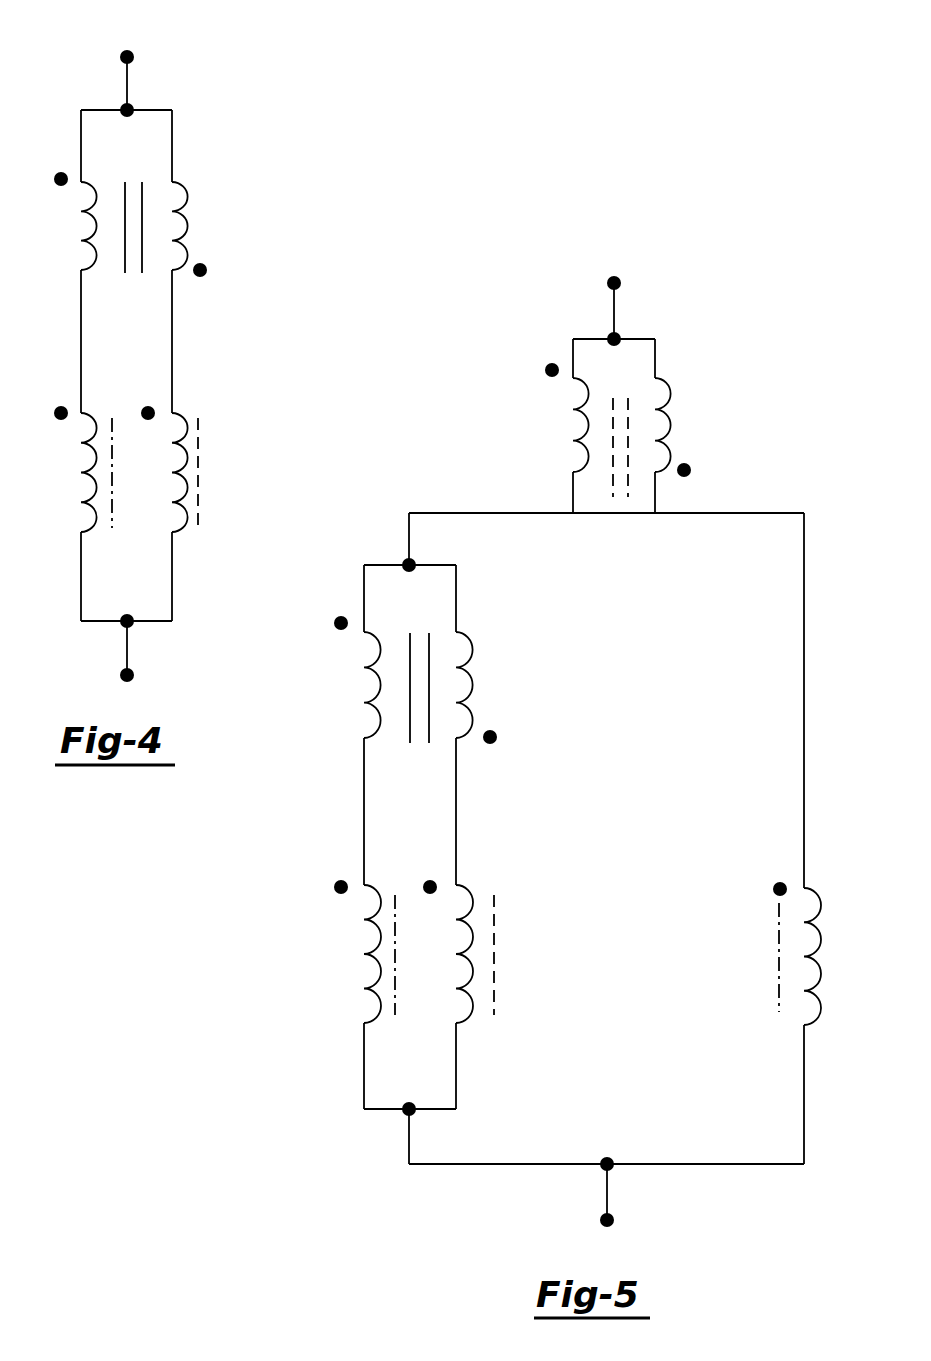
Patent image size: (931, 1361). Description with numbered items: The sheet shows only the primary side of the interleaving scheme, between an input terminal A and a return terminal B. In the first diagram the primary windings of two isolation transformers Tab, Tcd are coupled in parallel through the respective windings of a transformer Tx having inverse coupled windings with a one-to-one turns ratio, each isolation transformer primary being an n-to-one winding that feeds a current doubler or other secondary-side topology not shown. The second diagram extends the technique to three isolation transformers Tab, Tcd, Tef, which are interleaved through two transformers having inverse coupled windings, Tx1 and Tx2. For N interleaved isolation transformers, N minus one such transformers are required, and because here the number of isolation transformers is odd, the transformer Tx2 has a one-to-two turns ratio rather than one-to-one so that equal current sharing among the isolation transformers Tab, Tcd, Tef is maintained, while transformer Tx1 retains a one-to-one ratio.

In FIG. 4, the terminal A is at (114, 81).
In FIG. 5, the terminal A is at (634, 306).
In FIG. 4, the terminal B is at (114, 652).
In FIG. 5, the terminal B is at (630, 1202).
In FIG. 4, the transformer having inverse coupled windings Tx is at (123, 210).
In FIG. 5, the transformer having inverse coupled windings Tx1 is at (396, 666).
In FIG. 5, the transformer having inverse coupled windings Tx2 is at (618, 456).
In FIG. 4, the isolation transformer Tcd is at (68, 500).
In FIG. 5, the isolation transformer Tcd is at (347, 964).
In FIG. 4, the isolation transformer Tab is at (195, 500).
In FIG. 5, the isolation transformer Tab is at (485, 964).
In FIG. 5, the isolation transformer Tef is at (824, 965).